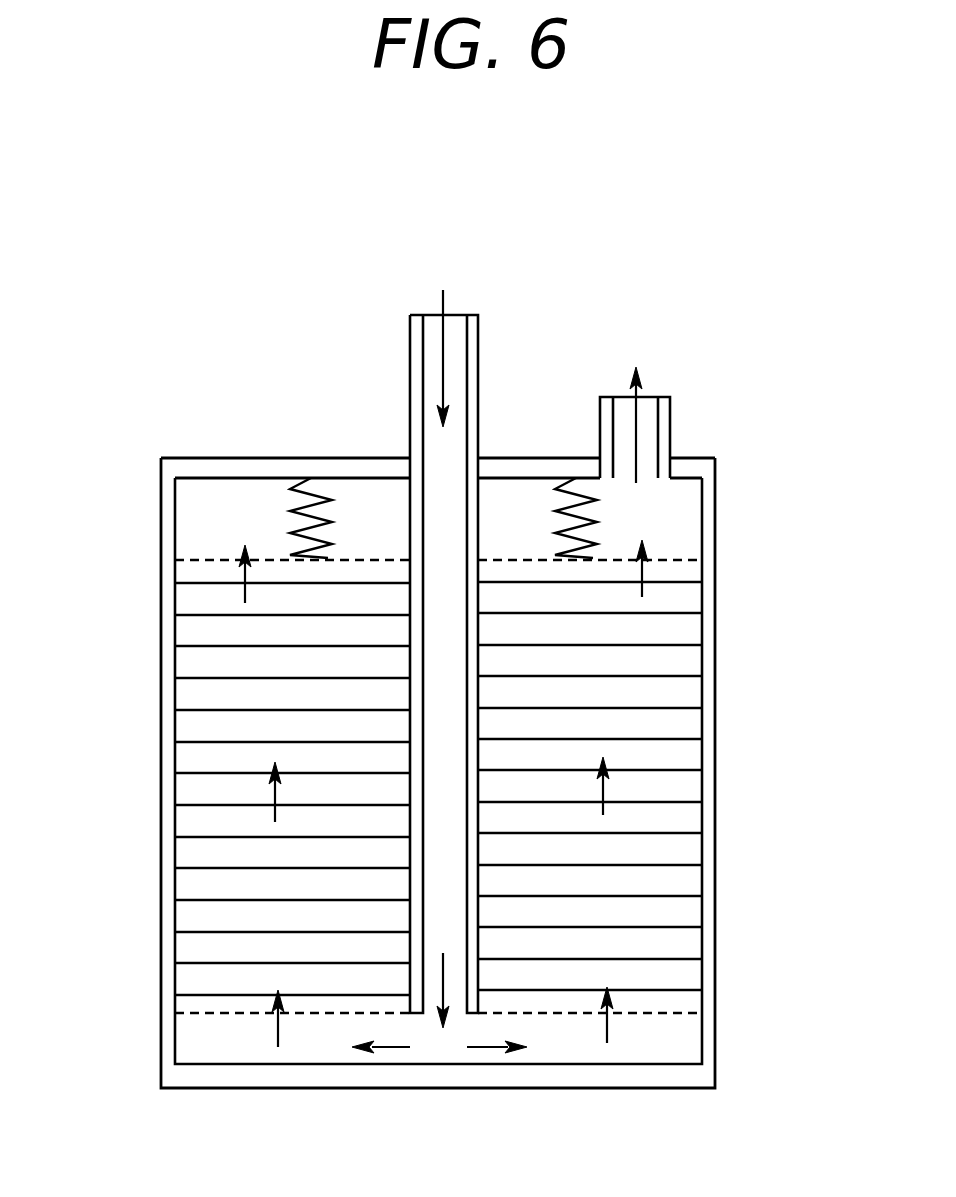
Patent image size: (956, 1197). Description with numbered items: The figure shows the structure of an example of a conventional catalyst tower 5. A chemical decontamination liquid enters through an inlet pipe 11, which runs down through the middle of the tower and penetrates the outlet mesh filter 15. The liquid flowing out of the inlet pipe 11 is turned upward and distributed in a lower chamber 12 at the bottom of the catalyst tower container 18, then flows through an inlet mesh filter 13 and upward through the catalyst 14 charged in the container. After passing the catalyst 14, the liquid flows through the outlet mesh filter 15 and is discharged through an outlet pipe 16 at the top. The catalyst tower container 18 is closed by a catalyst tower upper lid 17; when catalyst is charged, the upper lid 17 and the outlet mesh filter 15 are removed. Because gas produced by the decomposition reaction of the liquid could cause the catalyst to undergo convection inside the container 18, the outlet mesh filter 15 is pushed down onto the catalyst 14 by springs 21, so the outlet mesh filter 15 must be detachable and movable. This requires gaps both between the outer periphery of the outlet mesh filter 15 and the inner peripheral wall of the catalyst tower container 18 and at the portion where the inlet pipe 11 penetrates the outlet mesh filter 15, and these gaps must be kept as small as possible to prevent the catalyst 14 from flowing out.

The catalyst tower 5 is at (145, 685).
The inlet pipe 11 is at (478, 314).
The lower chamber 12 is at (202, 1025).
The inlet mesh filter 13 is at (662, 1008).
The catalyst 14 is at (658, 830).
The outlet mesh filter 15 is at (663, 556).
The outlet pipe 16 is at (670, 430).
The catalyst tower upper lid 17 is at (178, 457).
The catalyst tower container 18 is at (163, 843).
The springs 21 is at (288, 525).